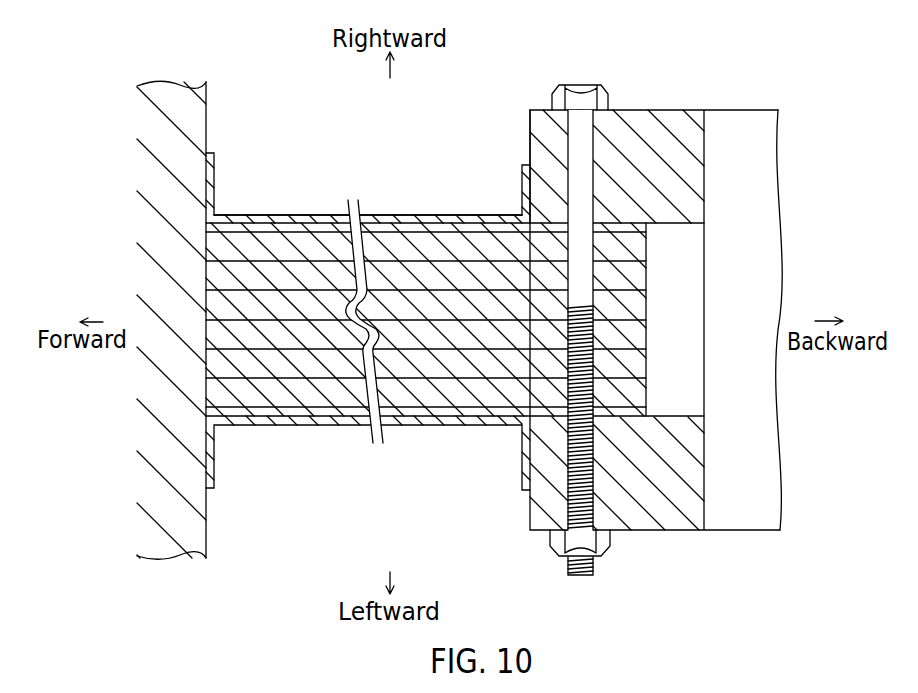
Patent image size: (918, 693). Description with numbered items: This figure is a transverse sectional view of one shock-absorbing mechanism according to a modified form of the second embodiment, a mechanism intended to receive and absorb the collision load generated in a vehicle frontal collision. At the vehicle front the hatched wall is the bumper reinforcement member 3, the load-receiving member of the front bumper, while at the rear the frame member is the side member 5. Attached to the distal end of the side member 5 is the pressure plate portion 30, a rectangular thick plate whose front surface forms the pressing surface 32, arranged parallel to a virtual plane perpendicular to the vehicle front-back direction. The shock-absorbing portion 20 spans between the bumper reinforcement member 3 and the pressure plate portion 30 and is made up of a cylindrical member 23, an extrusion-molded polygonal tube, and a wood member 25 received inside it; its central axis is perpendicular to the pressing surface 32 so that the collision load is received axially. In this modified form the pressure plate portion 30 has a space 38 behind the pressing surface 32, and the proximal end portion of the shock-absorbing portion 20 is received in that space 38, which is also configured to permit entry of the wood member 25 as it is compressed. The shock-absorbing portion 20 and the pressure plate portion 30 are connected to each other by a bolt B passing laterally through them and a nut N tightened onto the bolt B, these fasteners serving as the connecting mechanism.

The bumper reinforcement member 3 is at (180, 412).
The side member 5 is at (735, 125).
The shock-absorbing portion 20 is at (368, 306).
The cylindrical member 23 is at (435, 213).
The wood member 25 is at (418, 335).
The pressure plate portion 30 is at (633, 266).
The pressing surface 32 is at (528, 152).
The space 38 is at (672, 224).
The bolt B is at (581, 98).
The nut N is at (604, 535).